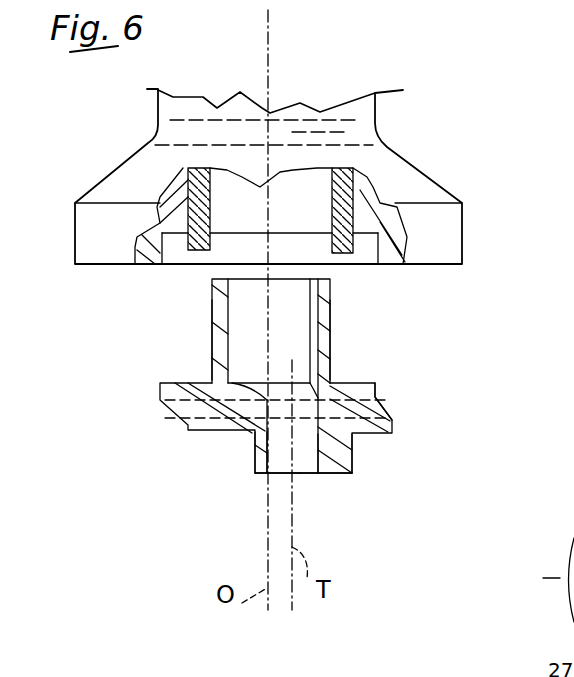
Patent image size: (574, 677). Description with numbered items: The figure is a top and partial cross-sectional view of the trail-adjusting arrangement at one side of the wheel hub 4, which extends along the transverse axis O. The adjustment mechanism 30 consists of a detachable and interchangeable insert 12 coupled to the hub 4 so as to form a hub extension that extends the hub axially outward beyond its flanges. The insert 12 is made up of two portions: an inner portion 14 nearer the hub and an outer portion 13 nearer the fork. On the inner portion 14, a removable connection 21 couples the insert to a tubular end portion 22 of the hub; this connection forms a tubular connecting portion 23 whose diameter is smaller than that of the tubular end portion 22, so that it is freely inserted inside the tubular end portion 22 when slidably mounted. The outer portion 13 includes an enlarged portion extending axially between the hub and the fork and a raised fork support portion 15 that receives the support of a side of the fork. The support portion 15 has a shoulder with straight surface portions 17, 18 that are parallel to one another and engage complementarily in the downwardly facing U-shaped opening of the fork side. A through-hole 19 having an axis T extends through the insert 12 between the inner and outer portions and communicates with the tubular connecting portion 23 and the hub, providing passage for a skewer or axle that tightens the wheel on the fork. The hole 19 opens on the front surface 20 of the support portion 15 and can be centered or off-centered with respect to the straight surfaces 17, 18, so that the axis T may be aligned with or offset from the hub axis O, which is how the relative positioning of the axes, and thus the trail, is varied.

The hub 4 is at (415, 270).
The insert 12 is at (386, 404).
The outer portion 13 is at (307, 428).
The inner portion 14 is at (285, 339).
The raised fork support portion 15 is at (327, 474).
The straight surface portion 17 is at (254, 452).
The straight surface portion 18 is at (355, 450).
The hole 19 is at (270, 468).
The front surface 20 is at (342, 480).
The removable connection 21 is at (211, 340).
The tubular end portion 22 is at (199, 246).
The tubular connecting portion 23 is at (330, 340).
The adjustment mechanism 30 is at (354, 398).